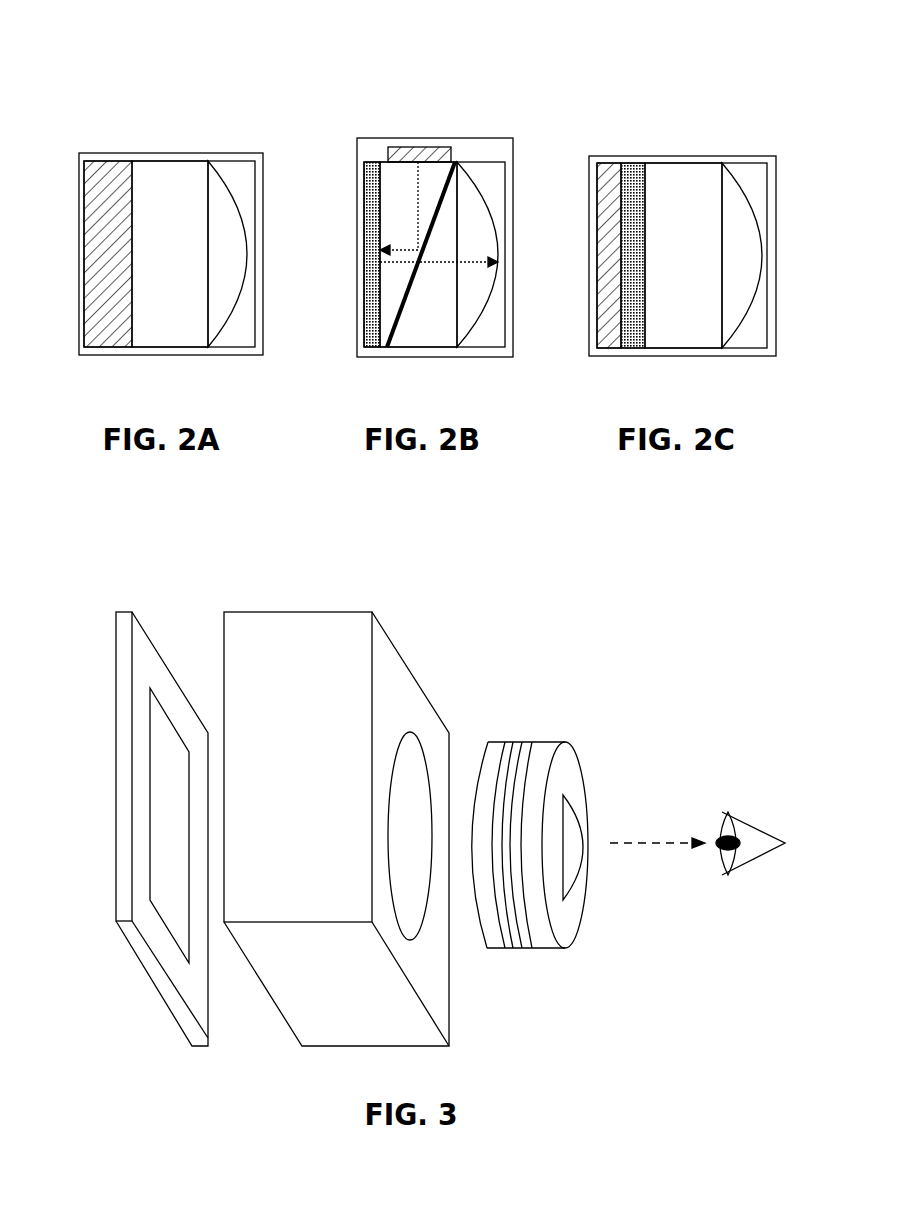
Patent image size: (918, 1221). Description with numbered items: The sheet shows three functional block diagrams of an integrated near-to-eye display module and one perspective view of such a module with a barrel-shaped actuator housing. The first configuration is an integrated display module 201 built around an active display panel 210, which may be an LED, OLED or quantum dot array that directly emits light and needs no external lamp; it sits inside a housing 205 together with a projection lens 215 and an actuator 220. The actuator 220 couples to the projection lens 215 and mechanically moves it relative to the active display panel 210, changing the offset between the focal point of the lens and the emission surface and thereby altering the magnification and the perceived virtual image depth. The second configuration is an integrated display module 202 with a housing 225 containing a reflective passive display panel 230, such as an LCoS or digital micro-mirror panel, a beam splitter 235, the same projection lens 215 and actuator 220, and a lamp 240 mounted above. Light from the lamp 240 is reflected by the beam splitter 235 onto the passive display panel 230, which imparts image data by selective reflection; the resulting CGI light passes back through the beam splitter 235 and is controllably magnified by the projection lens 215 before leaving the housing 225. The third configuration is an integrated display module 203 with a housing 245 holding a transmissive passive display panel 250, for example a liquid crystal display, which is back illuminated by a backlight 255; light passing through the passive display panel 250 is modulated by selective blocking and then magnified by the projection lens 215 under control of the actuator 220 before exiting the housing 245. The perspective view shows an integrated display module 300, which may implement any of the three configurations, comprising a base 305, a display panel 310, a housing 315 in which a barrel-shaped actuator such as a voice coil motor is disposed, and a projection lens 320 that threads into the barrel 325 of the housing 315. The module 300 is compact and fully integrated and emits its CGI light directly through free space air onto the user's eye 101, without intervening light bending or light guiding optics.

In FIG. 2A, the integrated display module 201 is at (92, 111).
In FIG. 2B, the integrated display module 202 is at (387, 90).
In FIG. 2C, the integrated display module 203 is at (612, 90).
In FIG. 2A, the housing 205 is at (172, 153).
In FIG. 2A, the active display panel 210 is at (95, 260).
In FIG. 2A, the projection lens 215 is at (215, 260).
In FIG. 2B, the projection lens 215 is at (464, 243).
In FIG. 2C, the projection lens 215 is at (727, 262).
In FIG. 2A, the actuator 220 is at (155, 260).
In FIG. 2B, the actuator 220 is at (420, 323).
In FIG. 2C, the actuator 220 is at (670, 270).
In FIG. 2B, the housing 225 is at (487, 138).
In FIG. 2B, the passive display panel 230 is at (372, 308).
In FIG. 2B, the beam splitter 235 is at (392, 345).
In FIG. 2B, the lamp 240 is at (417, 147).
In FIG. 2C, the housing 245 is at (727, 156).
In FIG. 2C, the passive display panel 250 is at (628, 293).
In FIG. 2C, the backlight 255 is at (605, 187).
In FIG. 3, the integrated display module 300 is at (551, 579).
In FIG. 3, the base 305 is at (125, 826).
In FIG. 3, the display panel 310 is at (157, 835).
In FIG. 3, the housing 315 is at (279, 785).
In FIG. 3, the projection lens 320 is at (565, 762).
In FIG. 3, the barrel 325 is at (397, 844).
In FIG. 3, the eye 101 is at (740, 820).